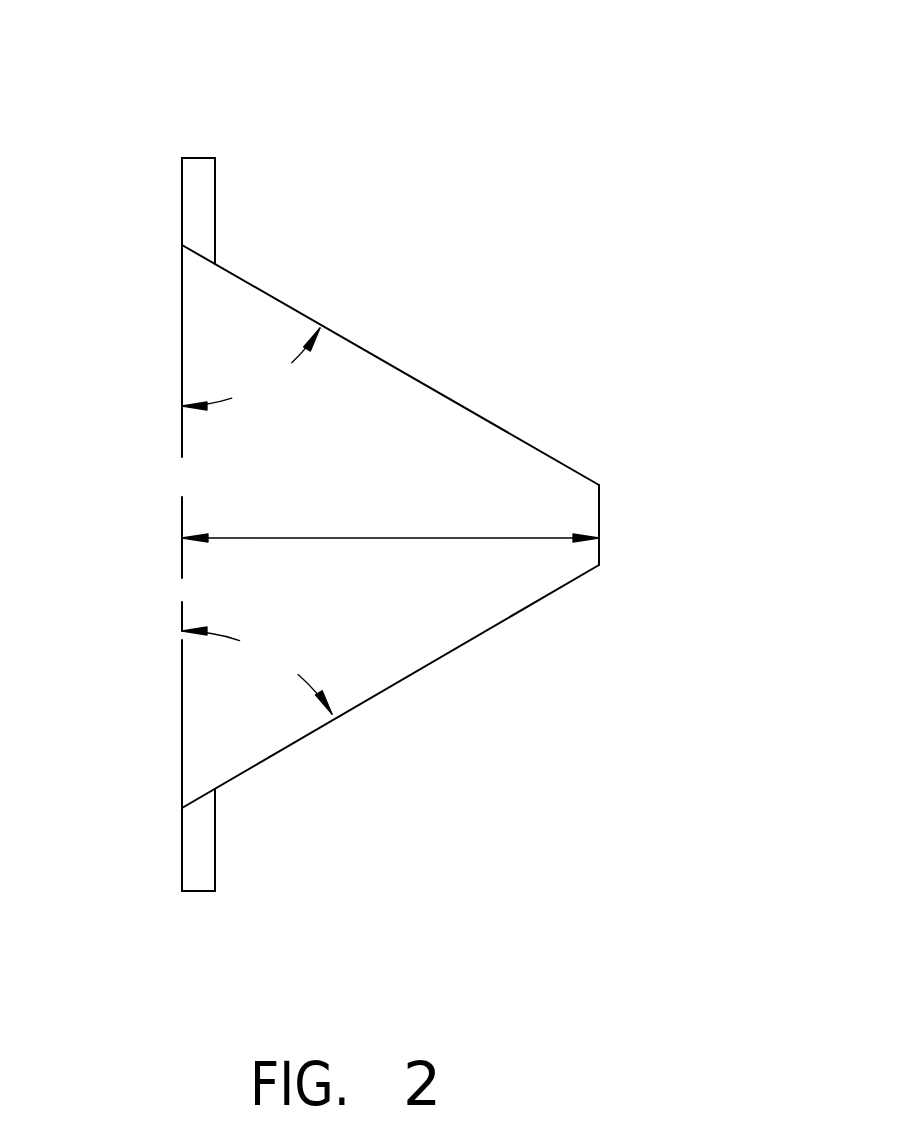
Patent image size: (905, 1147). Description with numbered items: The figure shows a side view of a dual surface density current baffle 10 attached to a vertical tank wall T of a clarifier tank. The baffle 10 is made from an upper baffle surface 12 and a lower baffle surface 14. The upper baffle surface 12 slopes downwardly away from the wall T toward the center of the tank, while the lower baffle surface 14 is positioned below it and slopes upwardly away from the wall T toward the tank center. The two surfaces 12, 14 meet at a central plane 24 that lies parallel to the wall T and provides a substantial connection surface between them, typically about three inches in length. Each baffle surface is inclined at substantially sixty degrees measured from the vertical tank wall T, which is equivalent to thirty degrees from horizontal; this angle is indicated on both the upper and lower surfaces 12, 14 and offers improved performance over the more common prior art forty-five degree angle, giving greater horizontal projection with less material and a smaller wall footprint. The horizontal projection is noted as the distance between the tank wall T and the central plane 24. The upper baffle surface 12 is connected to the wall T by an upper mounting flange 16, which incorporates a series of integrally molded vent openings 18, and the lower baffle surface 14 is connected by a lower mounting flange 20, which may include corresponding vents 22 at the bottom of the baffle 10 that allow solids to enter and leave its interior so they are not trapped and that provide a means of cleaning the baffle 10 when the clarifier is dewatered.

The dual surface density current baffle 10 is at (409, 508).
The upper baffle surface 12 is at (418, 380).
The lower baffle surface 14 is at (413, 677).
The upper mounting flange 16 is at (248, 135).
The vent openings 18 is at (197, 158).
The lower mounting flange 20 is at (200, 891).
The vents 22 is at (231, 899).
The central plane 24 is at (599, 510).
The tank wall T is at (182, 708).